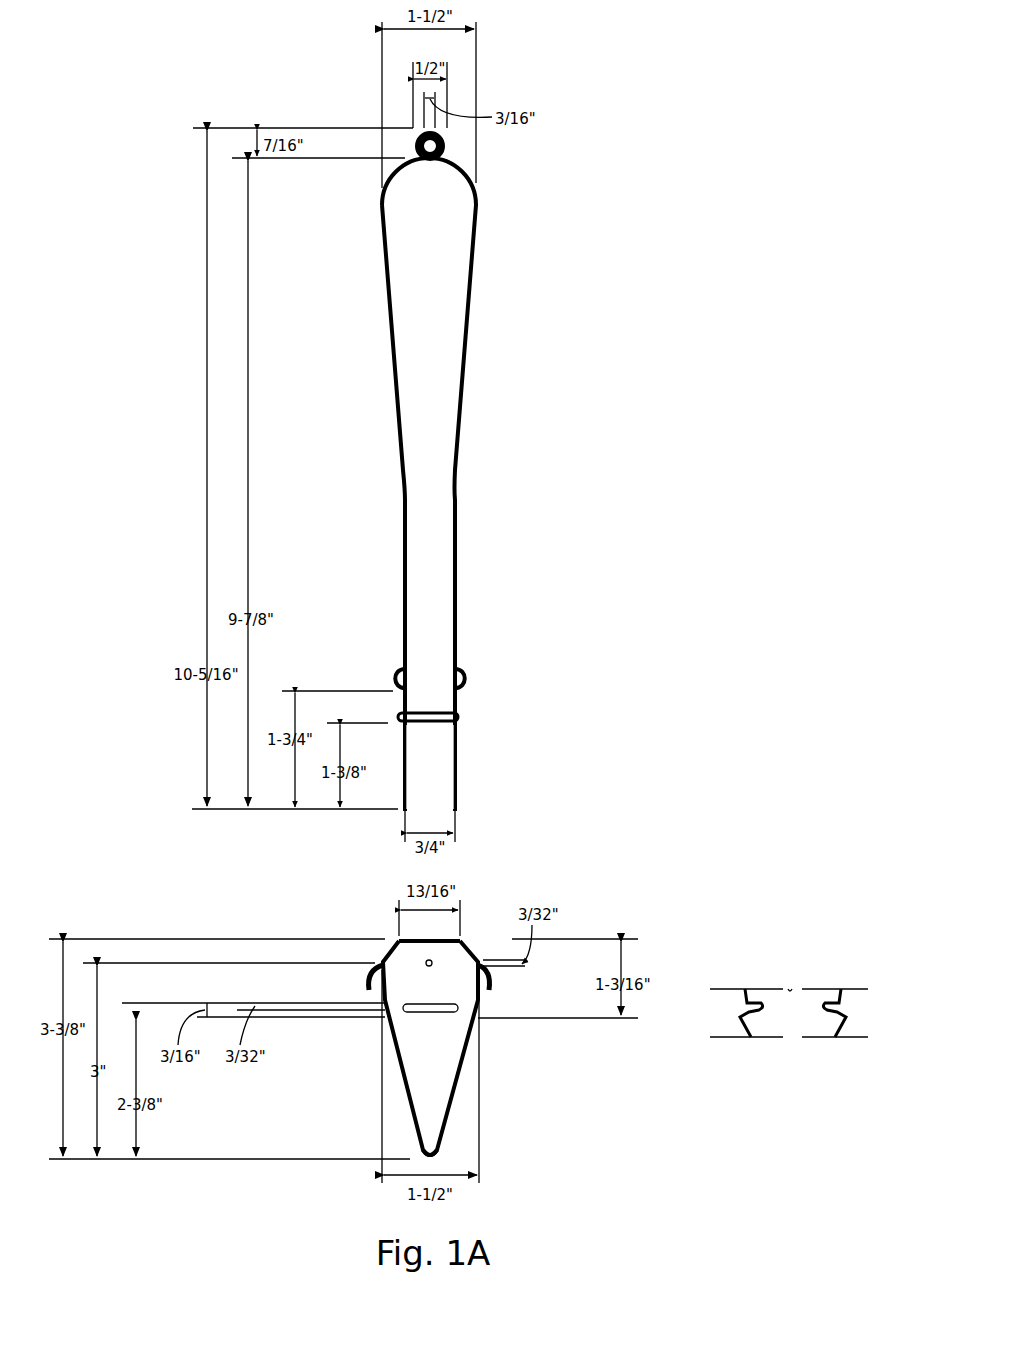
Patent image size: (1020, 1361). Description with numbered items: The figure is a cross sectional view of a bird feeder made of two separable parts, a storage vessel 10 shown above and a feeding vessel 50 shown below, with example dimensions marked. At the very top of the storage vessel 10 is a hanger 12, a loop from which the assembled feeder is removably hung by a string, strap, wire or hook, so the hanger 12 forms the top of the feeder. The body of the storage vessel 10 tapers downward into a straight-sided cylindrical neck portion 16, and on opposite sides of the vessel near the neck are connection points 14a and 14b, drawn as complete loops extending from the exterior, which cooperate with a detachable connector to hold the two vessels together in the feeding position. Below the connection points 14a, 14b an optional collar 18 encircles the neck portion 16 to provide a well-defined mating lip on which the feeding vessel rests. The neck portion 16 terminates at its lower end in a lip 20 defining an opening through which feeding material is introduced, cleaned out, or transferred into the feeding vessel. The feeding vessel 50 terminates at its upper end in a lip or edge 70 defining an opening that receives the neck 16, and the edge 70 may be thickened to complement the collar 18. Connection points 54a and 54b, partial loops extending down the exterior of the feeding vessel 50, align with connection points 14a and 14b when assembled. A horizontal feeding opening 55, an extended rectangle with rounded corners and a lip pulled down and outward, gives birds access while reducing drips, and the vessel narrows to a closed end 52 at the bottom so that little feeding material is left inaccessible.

The storage vessel 10 is at (400, 470).
The hanger 12 is at (447, 150).
The connection point 14a is at (463, 675).
The connection point 14b is at (395, 681).
The neck portion 16 is at (465, 723).
The collar 18 is at (460, 712).
The lip 20 is at (428, 808).
The feeding vessel 50 is at (462, 1072).
The closed end 52 is at (440, 1153).
The connection point 54a is at (370, 988).
The connection point 54b is at (490, 985).
The feeding opening 55 is at (433, 1012).
The lip or edge 70 is at (462, 941).